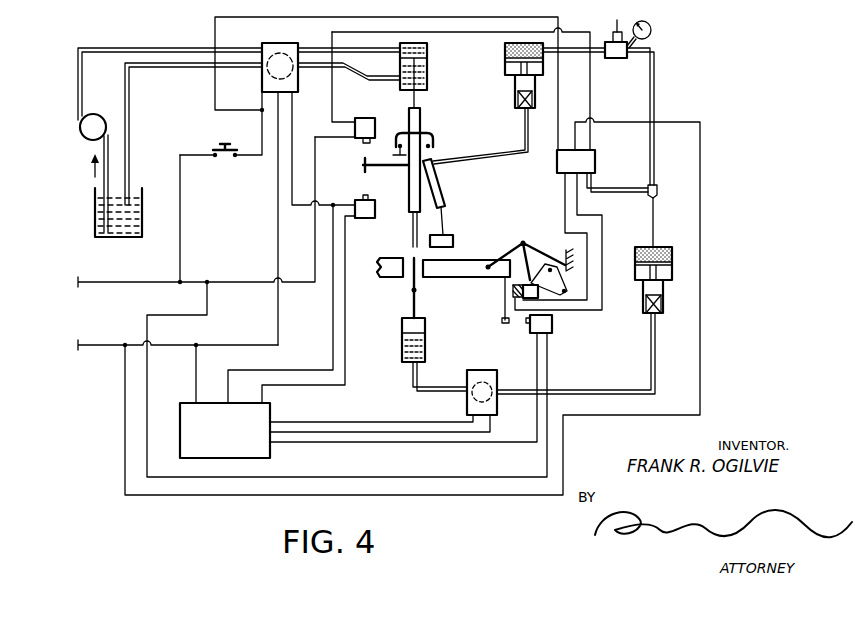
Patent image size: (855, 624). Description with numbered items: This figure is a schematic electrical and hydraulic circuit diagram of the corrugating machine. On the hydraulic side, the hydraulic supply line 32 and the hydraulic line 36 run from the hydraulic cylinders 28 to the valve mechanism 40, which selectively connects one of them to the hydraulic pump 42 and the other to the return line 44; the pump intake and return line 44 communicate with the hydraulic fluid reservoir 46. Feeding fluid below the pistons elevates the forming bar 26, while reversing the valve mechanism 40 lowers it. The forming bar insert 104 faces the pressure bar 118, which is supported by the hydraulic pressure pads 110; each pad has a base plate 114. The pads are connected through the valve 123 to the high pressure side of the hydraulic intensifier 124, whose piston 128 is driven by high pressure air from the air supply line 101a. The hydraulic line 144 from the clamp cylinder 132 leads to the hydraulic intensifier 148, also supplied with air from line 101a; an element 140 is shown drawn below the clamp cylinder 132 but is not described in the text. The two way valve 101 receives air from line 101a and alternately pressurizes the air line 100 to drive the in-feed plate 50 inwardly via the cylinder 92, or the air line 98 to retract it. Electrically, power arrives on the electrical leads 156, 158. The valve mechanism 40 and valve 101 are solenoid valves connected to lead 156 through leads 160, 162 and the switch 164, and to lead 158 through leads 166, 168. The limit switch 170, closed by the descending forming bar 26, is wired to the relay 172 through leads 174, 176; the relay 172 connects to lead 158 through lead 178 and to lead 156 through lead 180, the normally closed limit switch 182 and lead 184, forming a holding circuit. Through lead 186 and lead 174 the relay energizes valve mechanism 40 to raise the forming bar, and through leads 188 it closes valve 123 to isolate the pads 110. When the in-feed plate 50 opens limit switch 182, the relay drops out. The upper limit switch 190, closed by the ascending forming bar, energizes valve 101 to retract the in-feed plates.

The valve mechanism 40 is at (270, 43).
The return line 44 is at (155, 68).
The hydraulic pump 42 is at (82, 140).
The hydraulic fluid reservoir 46 is at (95, 228).
The switch 164 is at (225, 145).
The lead 186 is at (291, 172).
The lead 160 is at (182, 220).
The lead 166 is at (280, 247).
The electrical lead 156 is at (137, 282).
The electrical lead 158 is at (109, 347).
The lead 178 is at (198, 349).
The hydraulic line 36 is at (358, 42).
The hydraulic supply line 32 is at (382, 71).
The hydraulic cylinder 28 is at (427, 55).
The forming bar 26 is at (420, 117).
The hydraulic intensifier 148 is at (514, 92).
The hydraulic line 144 is at (524, 125).
The upper limit switch 190 is at (358, 141).
The limit switch 170 is at (387, 192).
The clamp cylinder 132 is at (443, 182).
The base plate 114 is at (410, 17).
The lead 162 is at (524, 17).
The air supply line 101a is at (622, 18).
The two way valve 101 is at (596, 166).
The forming bar insert 104 is at (412, 241).
The weight 140 is at (446, 238).
The in-feed plate 50 is at (452, 278).
The pressure bar 118 is at (410, 292).
The cylinder 92 is at (512, 292).
The lead 174 is at (336, 325).
The lead 176 is at (346, 348).
The hydraulic pressure pad 110 is at (400, 362).
The valve 123 is at (480, 370).
The limit switch 182 is at (528, 328).
The air line 98 is at (563, 308).
The air line 100 is at (578, 313).
The hydraulic intensifier 124 is at (673, 256).
The piston 128 is at (664, 287).
The lead 168 is at (700, 376).
The relay 172 is at (272, 407).
The leads 188 is at (406, 432).
The lead 180 is at (414, 442).
The lead 184 is at (482, 477).